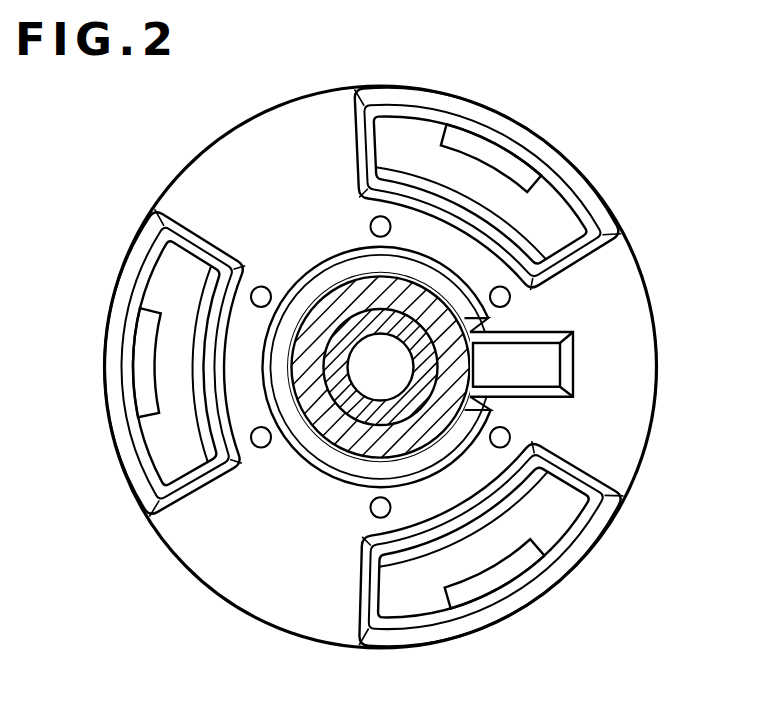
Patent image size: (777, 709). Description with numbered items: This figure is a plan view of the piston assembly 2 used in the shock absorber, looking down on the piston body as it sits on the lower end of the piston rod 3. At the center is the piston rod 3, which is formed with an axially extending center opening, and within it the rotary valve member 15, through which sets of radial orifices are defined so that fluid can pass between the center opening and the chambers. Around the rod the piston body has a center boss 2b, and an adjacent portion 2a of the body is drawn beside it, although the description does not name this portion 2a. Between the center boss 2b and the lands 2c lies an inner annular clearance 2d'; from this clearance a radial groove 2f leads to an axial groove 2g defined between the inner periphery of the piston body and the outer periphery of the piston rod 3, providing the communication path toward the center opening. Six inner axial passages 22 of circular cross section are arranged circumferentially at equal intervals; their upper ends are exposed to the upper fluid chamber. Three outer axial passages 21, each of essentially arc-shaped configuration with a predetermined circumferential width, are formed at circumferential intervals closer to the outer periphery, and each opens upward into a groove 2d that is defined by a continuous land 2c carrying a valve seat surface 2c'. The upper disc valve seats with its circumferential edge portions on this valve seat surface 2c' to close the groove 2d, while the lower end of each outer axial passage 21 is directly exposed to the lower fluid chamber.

The piston assembly 2 is at (329, 78).
The hub portion 2a is at (361, 275).
The center boss 2b is at (323, 280).
The land 2c is at (407, 367).
The valve seat surface 2c' is at (156, 385).
The groove 2d is at (367, 347).
The inner annular clearance 2d' is at (480, 579).
The radial groove 2f is at (553, 366).
The axial groove 2g is at (488, 318).
The piston rod 3 is at (452, 286).
The rotary valve member 15 is at (333, 392).
The outer axial passage 21 is at (517, 163).
The inner axial passage 22 is at (373, 218).